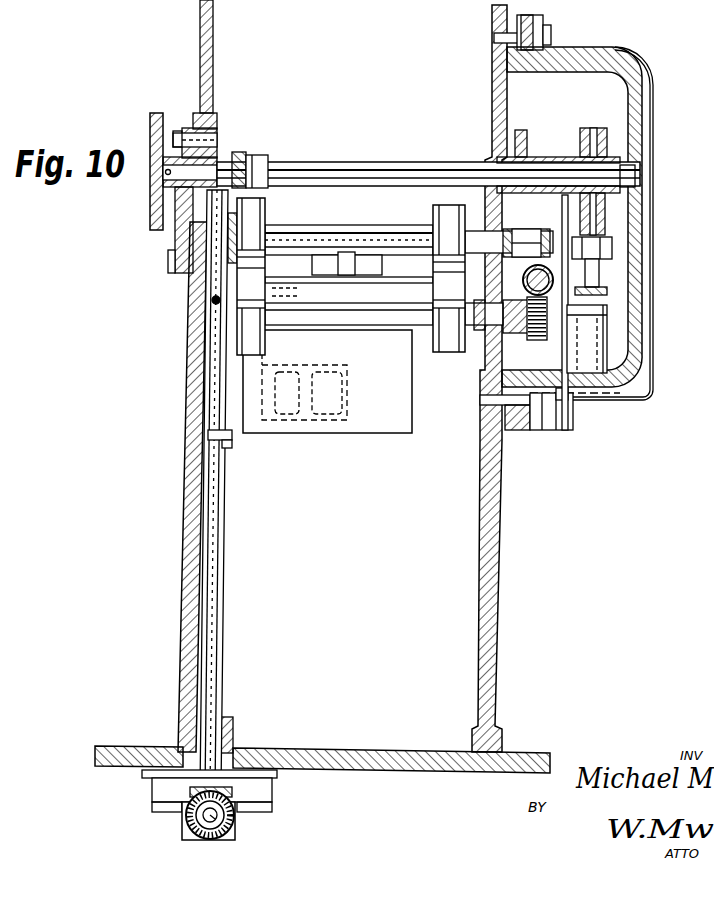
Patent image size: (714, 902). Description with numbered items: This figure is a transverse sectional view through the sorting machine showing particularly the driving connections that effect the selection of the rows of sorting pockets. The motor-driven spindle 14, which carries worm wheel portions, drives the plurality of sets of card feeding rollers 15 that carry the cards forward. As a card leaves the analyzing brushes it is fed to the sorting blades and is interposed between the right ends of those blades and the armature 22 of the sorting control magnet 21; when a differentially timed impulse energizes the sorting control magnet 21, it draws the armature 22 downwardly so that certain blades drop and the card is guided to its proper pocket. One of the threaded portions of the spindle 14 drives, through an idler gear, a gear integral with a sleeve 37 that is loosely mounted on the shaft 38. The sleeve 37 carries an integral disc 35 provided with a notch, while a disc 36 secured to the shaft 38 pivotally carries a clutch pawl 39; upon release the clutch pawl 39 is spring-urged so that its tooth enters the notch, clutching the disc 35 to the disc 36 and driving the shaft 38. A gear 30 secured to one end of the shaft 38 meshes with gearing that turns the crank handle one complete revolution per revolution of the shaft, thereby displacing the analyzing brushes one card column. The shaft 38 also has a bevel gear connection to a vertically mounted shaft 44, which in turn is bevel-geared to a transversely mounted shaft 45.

The spindle 14 is at (555, 290).
The card feeding rollers 15 is at (440, 220).
The sorting control magnet 21 is at (325, 383).
The armature 22 is at (350, 280).
The gear 30 is at (150, 134).
The disc 35 is at (607, 142).
The disc 36 is at (607, 217).
The sleeve 37 is at (552, 157).
The shaft 38 is at (412, 170).
The clutch pawl 39 is at (607, 252).
The vertically mounted shaft 44 is at (212, 475).
The transversely mounted shaft 45 is at (235, 825).